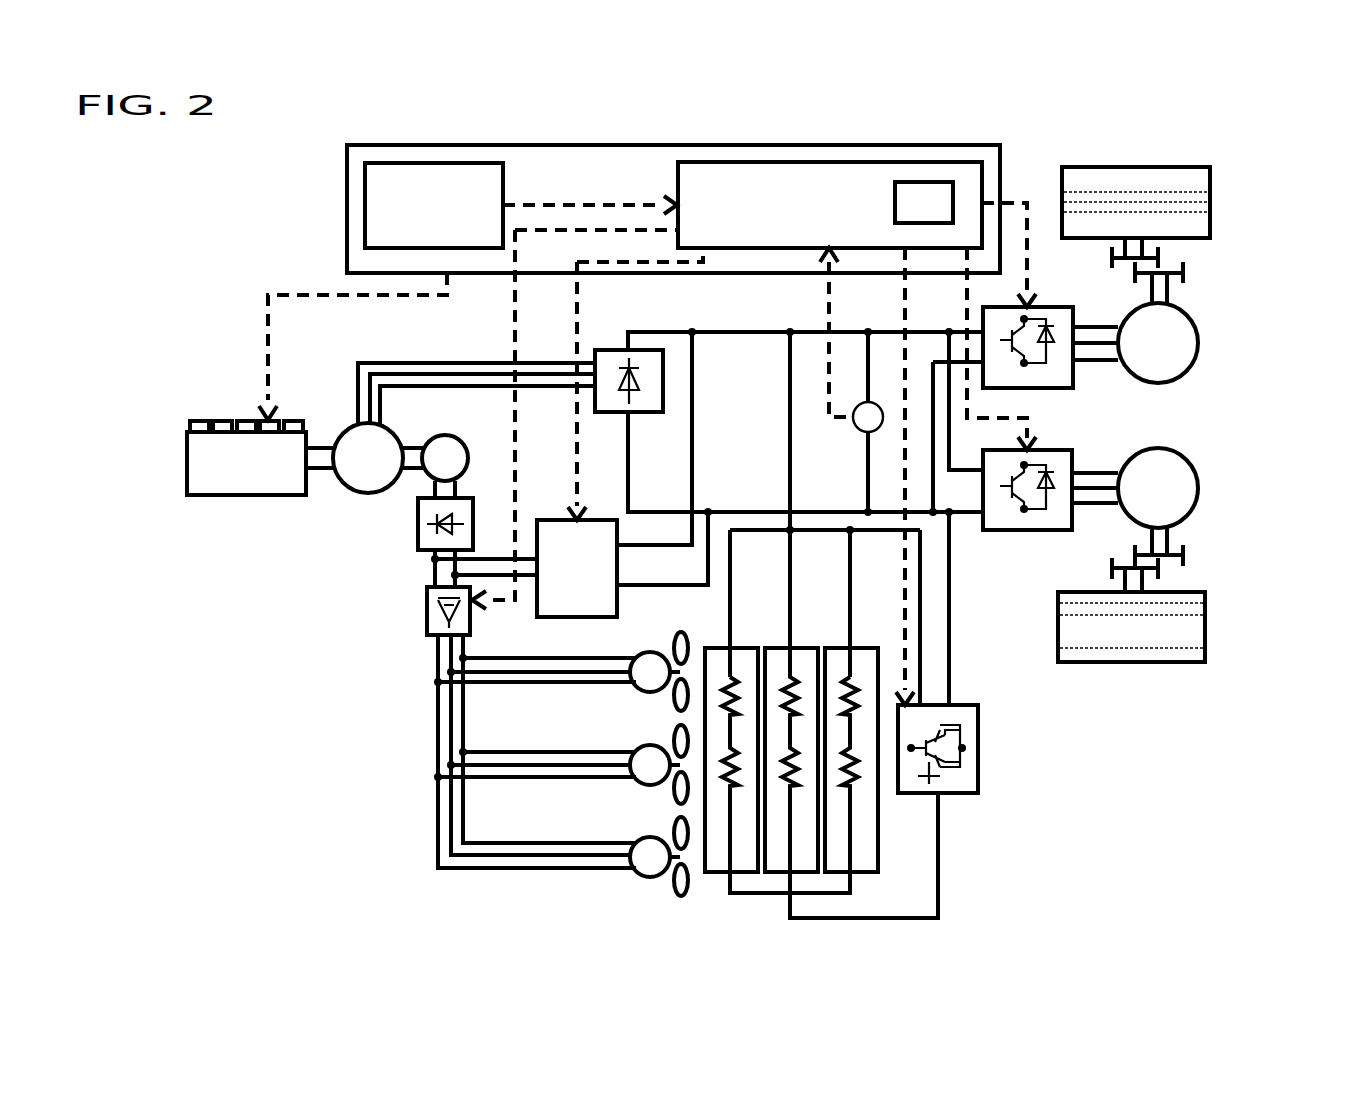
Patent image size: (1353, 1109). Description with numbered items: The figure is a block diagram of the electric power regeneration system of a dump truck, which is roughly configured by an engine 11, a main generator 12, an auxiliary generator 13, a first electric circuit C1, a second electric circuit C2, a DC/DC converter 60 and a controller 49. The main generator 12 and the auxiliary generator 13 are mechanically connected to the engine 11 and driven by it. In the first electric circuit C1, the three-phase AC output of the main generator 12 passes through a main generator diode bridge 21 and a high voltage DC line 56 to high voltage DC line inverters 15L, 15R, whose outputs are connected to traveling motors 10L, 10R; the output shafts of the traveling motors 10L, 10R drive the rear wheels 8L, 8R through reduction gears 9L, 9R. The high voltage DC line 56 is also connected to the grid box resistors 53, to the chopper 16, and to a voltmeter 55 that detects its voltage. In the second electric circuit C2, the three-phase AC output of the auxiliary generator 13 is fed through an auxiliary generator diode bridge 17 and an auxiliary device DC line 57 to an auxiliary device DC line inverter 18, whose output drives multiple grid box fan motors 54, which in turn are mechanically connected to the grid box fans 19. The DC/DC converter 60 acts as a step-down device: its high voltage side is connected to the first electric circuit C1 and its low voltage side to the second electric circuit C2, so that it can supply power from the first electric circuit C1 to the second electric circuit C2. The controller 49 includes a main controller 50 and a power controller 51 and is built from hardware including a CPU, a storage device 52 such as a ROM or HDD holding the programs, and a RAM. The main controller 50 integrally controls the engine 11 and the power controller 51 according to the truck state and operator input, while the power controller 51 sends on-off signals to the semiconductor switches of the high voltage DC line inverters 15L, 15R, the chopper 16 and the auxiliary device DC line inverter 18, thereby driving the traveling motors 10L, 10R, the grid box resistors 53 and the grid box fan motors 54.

The controller 49 is at (618, 145).
The main controller 50 is at (406, 163).
The power controller 51 is at (758, 162).
The storage device 52 is at (925, 182).
The engine 11 is at (250, 445).
The main generator 12 is at (340, 490).
The auxiliary generator 13 is at (445, 435).
The auxiliary generator diode bridge 17 is at (418, 518).
The auxiliary device DC line 57 is at (430, 576).
The auxiliary device DC line inverter 18 is at (427, 618).
The DC/DC converter 60 is at (545, 620).
The main generator diode bridge 21 is at (600, 350).
The high voltage DC line 56 is at (768, 336).
The voltmeter 55 is at (856, 428).
The grid box resistors 53 is at (830, 875).
The chopper 16 is at (976, 795).
The high voltage DC line inverter 15R is at (1078, 386).
The high voltage DC line inverter 15L is at (1075, 456).
The traveling motor 10R is at (1200, 340).
The traveling motor 10L is at (1200, 488).
The reduction gear 9R is at (1190, 264).
The reduction gear 9L is at (1190, 565).
The rear wheel 8R is at (1140, 192).
The rear wheel 8L is at (1140, 665).
The grid box fan motors 54 is at (636, 688).
The grid box fans 19 is at (680, 712).
The first electric circuit C1 is at (985, 550).
The second electric circuit C2 is at (412, 848).